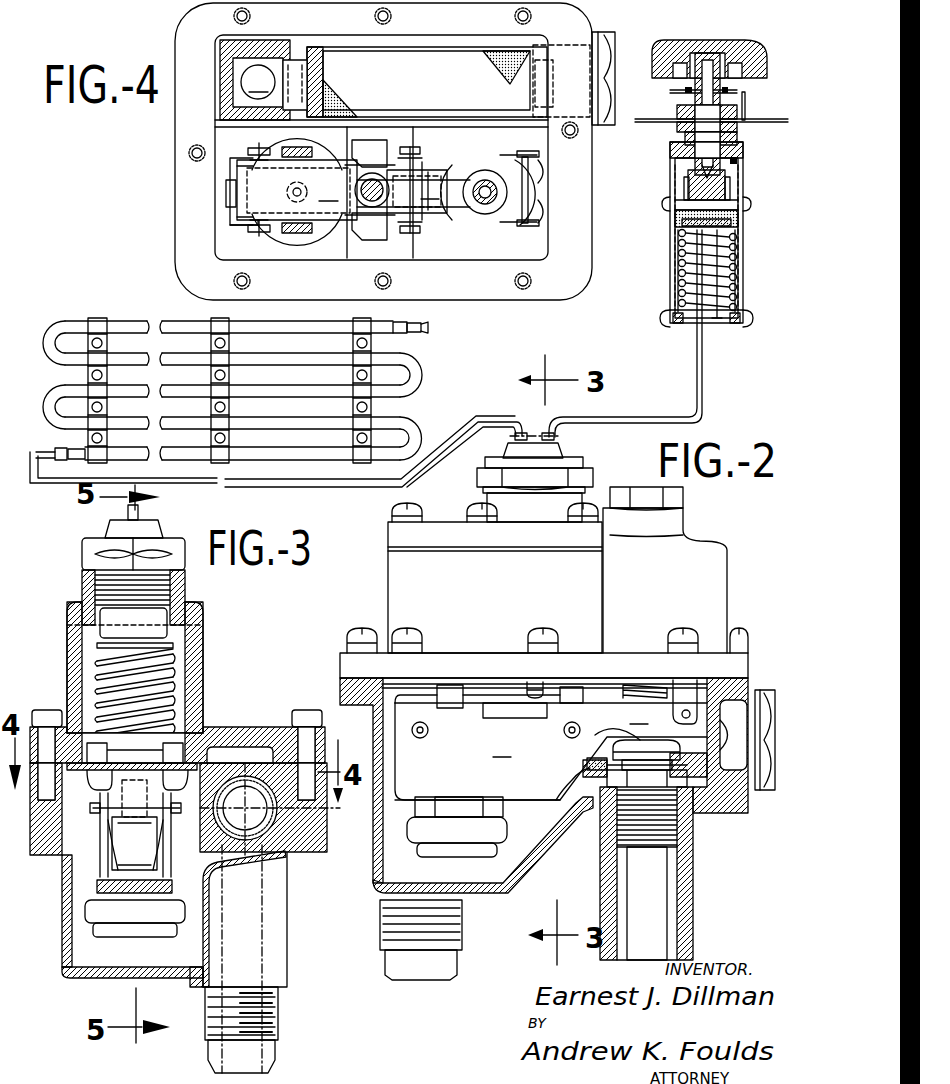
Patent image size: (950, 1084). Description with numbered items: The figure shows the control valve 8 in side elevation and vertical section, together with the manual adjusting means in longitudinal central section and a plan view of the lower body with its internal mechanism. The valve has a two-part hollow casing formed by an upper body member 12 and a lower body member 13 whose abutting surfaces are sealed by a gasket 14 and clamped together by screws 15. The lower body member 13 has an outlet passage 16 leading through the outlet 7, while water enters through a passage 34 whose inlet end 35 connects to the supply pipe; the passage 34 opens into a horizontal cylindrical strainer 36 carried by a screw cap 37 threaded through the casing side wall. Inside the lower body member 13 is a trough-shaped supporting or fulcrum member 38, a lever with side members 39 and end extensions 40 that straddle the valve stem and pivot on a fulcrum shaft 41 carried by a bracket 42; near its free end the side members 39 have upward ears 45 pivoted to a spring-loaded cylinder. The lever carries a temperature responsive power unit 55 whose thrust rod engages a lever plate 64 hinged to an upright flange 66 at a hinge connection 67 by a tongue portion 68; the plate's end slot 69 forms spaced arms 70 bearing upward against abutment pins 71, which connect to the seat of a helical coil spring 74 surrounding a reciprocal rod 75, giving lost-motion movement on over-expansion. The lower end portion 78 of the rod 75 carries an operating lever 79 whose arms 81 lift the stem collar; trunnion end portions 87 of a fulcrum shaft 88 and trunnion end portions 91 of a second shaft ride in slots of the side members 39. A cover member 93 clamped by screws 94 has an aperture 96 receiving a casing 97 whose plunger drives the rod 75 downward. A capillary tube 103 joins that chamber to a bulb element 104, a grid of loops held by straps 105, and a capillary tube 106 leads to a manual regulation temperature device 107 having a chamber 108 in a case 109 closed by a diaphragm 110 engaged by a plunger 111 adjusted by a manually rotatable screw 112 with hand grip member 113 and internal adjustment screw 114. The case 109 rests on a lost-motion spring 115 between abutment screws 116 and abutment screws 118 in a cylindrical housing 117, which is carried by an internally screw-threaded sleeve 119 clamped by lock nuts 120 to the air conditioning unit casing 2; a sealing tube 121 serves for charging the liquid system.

In FIG. 2, the air conditioning unit casing 2 is at (640, 118).
In FIG. 2, the outlet 7 is at (694, 860).
In FIG. 2, the control valve 8 is at (380, 573).
In FIG. 2, the upper body member 12 is at (725, 590).
In FIG. 4, the lower body member 13 is at (175, 173).
In FIG. 2, the lower body member 13 is at (712, 812).
In FIG. 2, the gasket 14 is at (345, 690).
In FIG. 2, the screws 15 is at (360, 629).
In FIG. 3, the screws 15 is at (48, 709).
In FIG. 2, the outlet passage 16 is at (665, 916).
In FIG. 4, the passage 34 is at (263, 80).
In FIG. 3, the passage 34 is at (250, 922).
In FIG. 2, the inlet end 35 is at (462, 946).
In FIG. 3, the inlet end 35 is at (276, 1025).
In FIG. 4, the cylindrical strainer 36 is at (450, 50).
In FIG. 2, the cylindrical strainer 36 is at (588, 778).
In FIG. 3, the cylindrical strainer 36 is at (238, 784).
In FIG. 4, the screw cap 37 is at (600, 33).
In FIG. 2, the screw cap 37 is at (762, 792).
In FIG. 2, the supporting or fulcrum member 38 is at (525, 793).
In FIG. 3, the supporting or fulcrum member 38 is at (176, 868).
In FIG. 2, the side members 39 is at (487, 751).
In FIG. 4, the end extensions 40 is at (540, 158).
In FIG. 2, the end extensions 40 is at (551, 743).
In FIG. 4, the fulcrum shaft 41 is at (541, 202).
In FIG. 2, the fulcrum shaft 41 is at (685, 702).
In FIG. 2, the bracket 42 is at (684, 686).
In FIG. 3, the ears or flanges 45 is at (128, 835).
In FIG. 2, the temperature responsive power unit 55 is at (428, 862).
In FIG. 3, the temperature responsive power unit 55 is at (121, 947).
In FIG. 4, the lever plate 64 is at (297, 192).
In FIG. 4, the upright flange or wall 66 is at (232, 175).
In FIG. 4, the hinge connection 67 is at (232, 212).
In FIG. 4, the tongue portion 68 is at (226, 195).
In FIG. 4, the end slot 69 is at (370, 182).
In FIG. 4, the spaced arms 70 is at (385, 139).
In FIG. 3, the spaced arms 70 is at (72, 797).
In FIG. 2, the abutment pins 71 is at (540, 684).
In FIG. 3, the abutment pins 71 is at (95, 750).
In FIG. 3, the helical coil spring 74 is at (175, 684).
In FIG. 4, the reciprocal rod 75 is at (365, 200).
In FIG. 3, the lower end portion 78 is at (134, 825).
In FIG. 4, the operating lever 79 is at (417, 191).
In FIG. 3, the operating lever 79 is at (114, 852).
In FIG. 4, the end extensions or arms 81 is at (480, 164).
In FIG. 2, the end extensions or arms 81 is at (655, 745).
In FIG. 4, the trunnion end portions 87 is at (416, 150).
In FIG. 4, the fulcrum shaft or rod 88 is at (438, 167).
In FIG. 4, the trunnion end portions 91 is at (257, 149).
In FIG. 3, the cover member 93 is at (72, 604).
In FIG. 2, the screws 94 is at (394, 515).
In FIG. 3, the aperture 96 is at (186, 598).
In FIG. 3, the casing 97 is at (82, 560).
In FIG. 2, the capillary tube 103 is at (484, 425).
In FIG. 2, the bulb element 104 is at (63, 323).
In FIG. 2, the straps 105 is at (107, 375).
In FIG. 2, the capillary tube 106 is at (608, 427).
In FIG. 2, the manual regulation temperature device 107 is at (660, 246).
In FIG. 2, the expansive contractable chamber 108 is at (728, 216).
In FIG. 2, the case 109 is at (684, 195).
In FIG. 2, the diaphragm 110 is at (688, 184).
In FIG. 2, the plunger 111 is at (736, 185).
In FIG. 2, the manually rotatable screw 112 is at (746, 98).
In FIG. 2, the hand grip member 113 is at (741, 46).
In FIG. 2, the adjustment screw 114 is at (700, 170).
In FIG. 2, the lost-motion spring 115 is at (738, 258).
In FIG. 2, the abutment screws 116 is at (665, 208).
In FIG. 2, the cylindrical housing 117 is at (744, 282).
In FIG. 2, the abutment screws 118 is at (678, 328).
In FIG. 2, the internally screw-threaded sleeve 119 is at (738, 140).
In FIG. 2, the lock nuts 120 is at (679, 117).
In FIG. 2, the sealing tube 121 is at (710, 330).